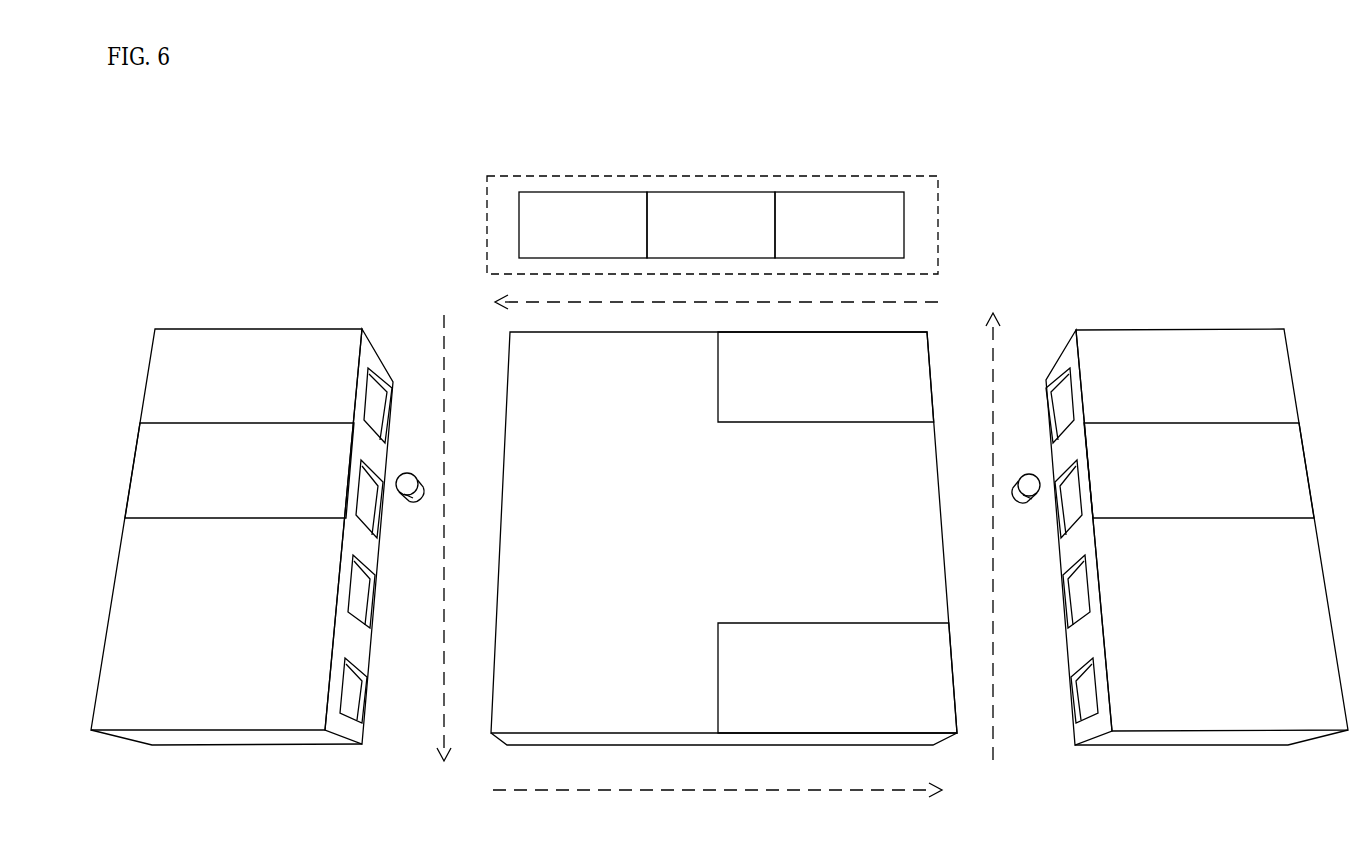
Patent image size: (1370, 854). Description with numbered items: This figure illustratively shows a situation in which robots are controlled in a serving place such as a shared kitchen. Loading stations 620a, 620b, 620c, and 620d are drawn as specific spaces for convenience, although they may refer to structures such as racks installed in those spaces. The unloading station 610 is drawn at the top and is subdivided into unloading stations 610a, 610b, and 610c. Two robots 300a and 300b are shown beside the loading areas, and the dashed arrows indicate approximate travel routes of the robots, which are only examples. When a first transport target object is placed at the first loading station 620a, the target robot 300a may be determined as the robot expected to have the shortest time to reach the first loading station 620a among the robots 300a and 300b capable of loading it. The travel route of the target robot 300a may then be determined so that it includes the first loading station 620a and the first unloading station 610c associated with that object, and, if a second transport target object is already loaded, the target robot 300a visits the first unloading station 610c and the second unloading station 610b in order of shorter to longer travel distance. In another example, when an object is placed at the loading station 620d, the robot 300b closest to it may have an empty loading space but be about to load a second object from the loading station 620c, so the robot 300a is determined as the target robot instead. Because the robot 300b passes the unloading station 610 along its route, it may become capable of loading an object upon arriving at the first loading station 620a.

The unloading station 610 is at (747, 225).
The unloading station 610a is at (583, 225).
The second unloading station 610b is at (711, 225).
The first unloading station 610c is at (839, 225).
The first loading station 620a is at (239, 470).
The loading station 620b is at (837, 678).
The second loading station 620c is at (1199, 470).
The first loading station 620d is at (826, 377).
The target robot 300a is at (407, 478).
The robot 300b is at (1025, 478).